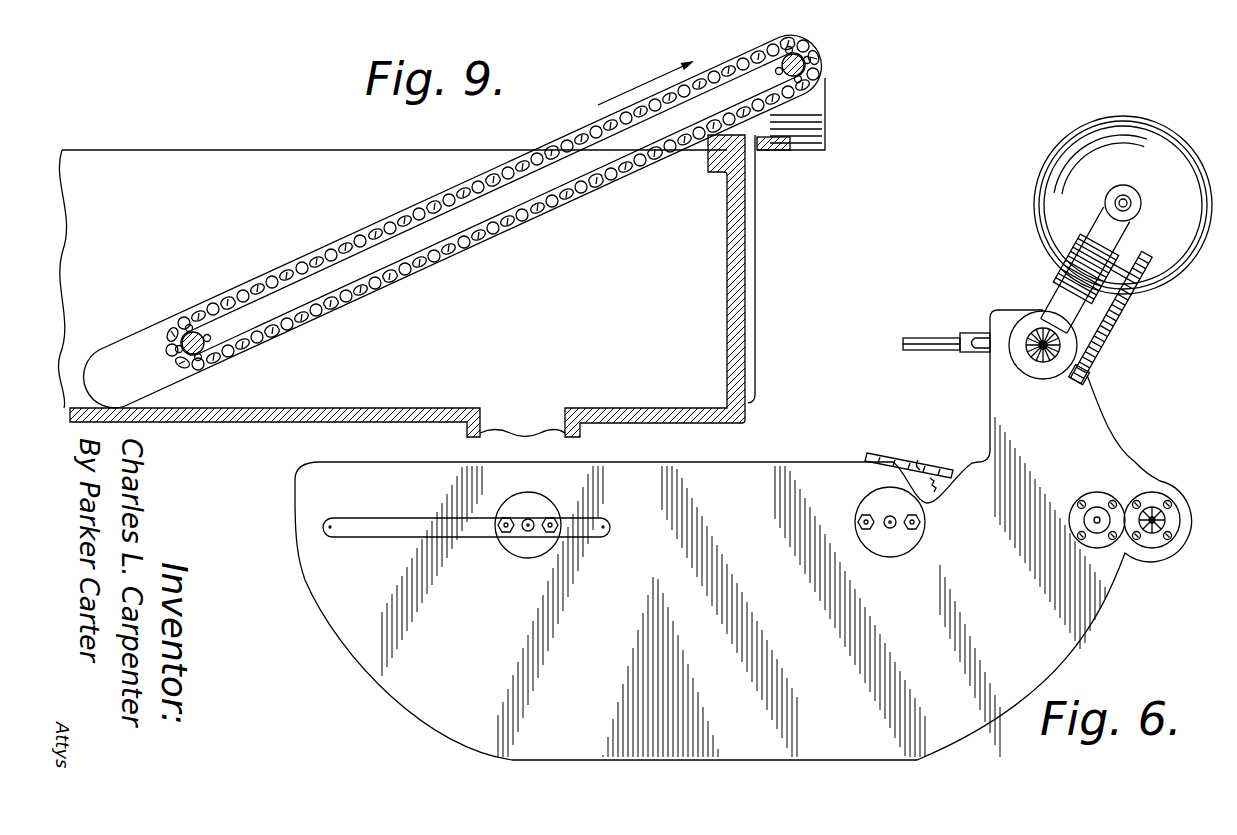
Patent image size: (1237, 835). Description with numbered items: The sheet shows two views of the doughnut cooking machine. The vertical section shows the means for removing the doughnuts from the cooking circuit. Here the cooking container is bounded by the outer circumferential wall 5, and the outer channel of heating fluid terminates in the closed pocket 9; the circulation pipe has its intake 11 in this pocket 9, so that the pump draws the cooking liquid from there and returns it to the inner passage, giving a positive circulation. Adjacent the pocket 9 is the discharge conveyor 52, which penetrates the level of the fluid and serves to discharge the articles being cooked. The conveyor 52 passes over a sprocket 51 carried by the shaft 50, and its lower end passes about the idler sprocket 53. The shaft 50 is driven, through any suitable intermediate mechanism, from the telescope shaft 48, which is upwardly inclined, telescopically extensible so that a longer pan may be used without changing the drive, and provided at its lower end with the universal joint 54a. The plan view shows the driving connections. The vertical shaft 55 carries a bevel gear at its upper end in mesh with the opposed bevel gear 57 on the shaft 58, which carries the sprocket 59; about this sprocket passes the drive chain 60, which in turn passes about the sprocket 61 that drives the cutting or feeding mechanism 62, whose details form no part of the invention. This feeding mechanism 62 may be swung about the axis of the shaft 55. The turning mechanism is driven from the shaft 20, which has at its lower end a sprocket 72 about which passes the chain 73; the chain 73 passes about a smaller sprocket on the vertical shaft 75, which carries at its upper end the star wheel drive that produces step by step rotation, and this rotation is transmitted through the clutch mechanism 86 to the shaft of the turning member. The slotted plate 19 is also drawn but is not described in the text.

In FIG. 9, the outer circumferential wall 5 is at (218, 168).
In FIG. 9, the closed pocket 9 is at (447, 257).
In FIG. 9, the intake 11 is at (525, 423).
In FIG. 9, the shaft 50 is at (812, 69).
In FIG. 9, the sprocket 51 is at (768, 58).
In FIG. 9, the conveyor 52 is at (578, 140).
In FIG. 9, the idler sprocket 53 is at (195, 316).
In FIG. 6, the bearing plate with slot 19 is at (527, 530).
In FIG. 6, the shaft 20 is at (890, 530).
In FIG. 6, the telescope shaft 48 is at (911, 338).
In FIG. 6, the universal joint 54a is at (975, 335).
In FIG. 6, the vertical shaft 55 is at (1030, 350).
In FIG. 6, the bevel gear 57 is at (1070, 353).
In FIG. 6, the shaft 58 is at (1067, 383).
In FIG. 6, the sprocket 59 is at (1087, 373).
In FIG. 6, the drive chain 60 is at (1110, 328).
In FIG. 6, the sprocket 61 is at (1147, 282).
In FIG. 6, the cutting or feeding mechanism 62 is at (1155, 137).
In FIG. 6, the sprocket 72 is at (924, 466).
In FIG. 6, the chain 73 is at (946, 470).
In FIG. 6, the vertical shaft 75 is at (1097, 518).
In FIG. 6, the clutch mechanism 86 is at (1150, 532).